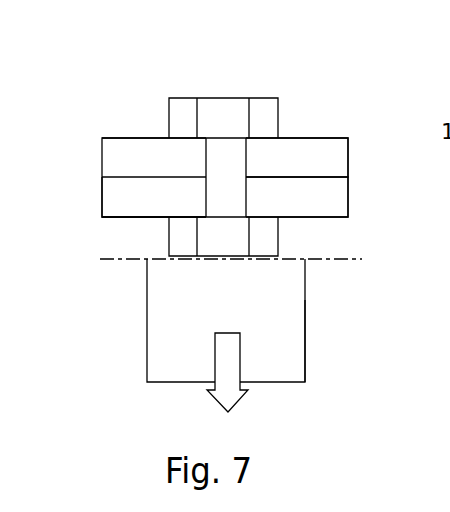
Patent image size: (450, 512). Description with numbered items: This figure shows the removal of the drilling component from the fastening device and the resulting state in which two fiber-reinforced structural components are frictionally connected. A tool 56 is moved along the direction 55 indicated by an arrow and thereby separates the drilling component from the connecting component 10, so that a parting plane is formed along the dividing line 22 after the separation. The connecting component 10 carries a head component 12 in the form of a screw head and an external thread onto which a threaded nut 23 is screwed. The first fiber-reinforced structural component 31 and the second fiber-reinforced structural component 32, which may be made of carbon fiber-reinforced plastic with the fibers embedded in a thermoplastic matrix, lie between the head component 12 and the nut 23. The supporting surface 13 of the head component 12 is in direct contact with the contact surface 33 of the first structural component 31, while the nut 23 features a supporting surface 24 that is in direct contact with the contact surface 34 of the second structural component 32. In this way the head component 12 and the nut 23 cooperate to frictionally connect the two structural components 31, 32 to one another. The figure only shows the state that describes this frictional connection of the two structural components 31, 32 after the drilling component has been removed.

The connecting component 10 is at (216, 152).
The head component 12 is at (265, 110).
The supporting surface 13 is at (264, 141).
The dividing line 22 is at (122, 260).
The threaded nut 23 is at (268, 248).
The supporting surface 24 is at (258, 208).
The first fiber-reinforced structural component 31 is at (108, 153).
The second fiber-reinforced structural component 32 is at (113, 199).
The contact surface 33 is at (124, 135).
The contact surface 34 is at (120, 218).
The direction 55 is at (228, 372).
The tool 56 is at (285, 358).